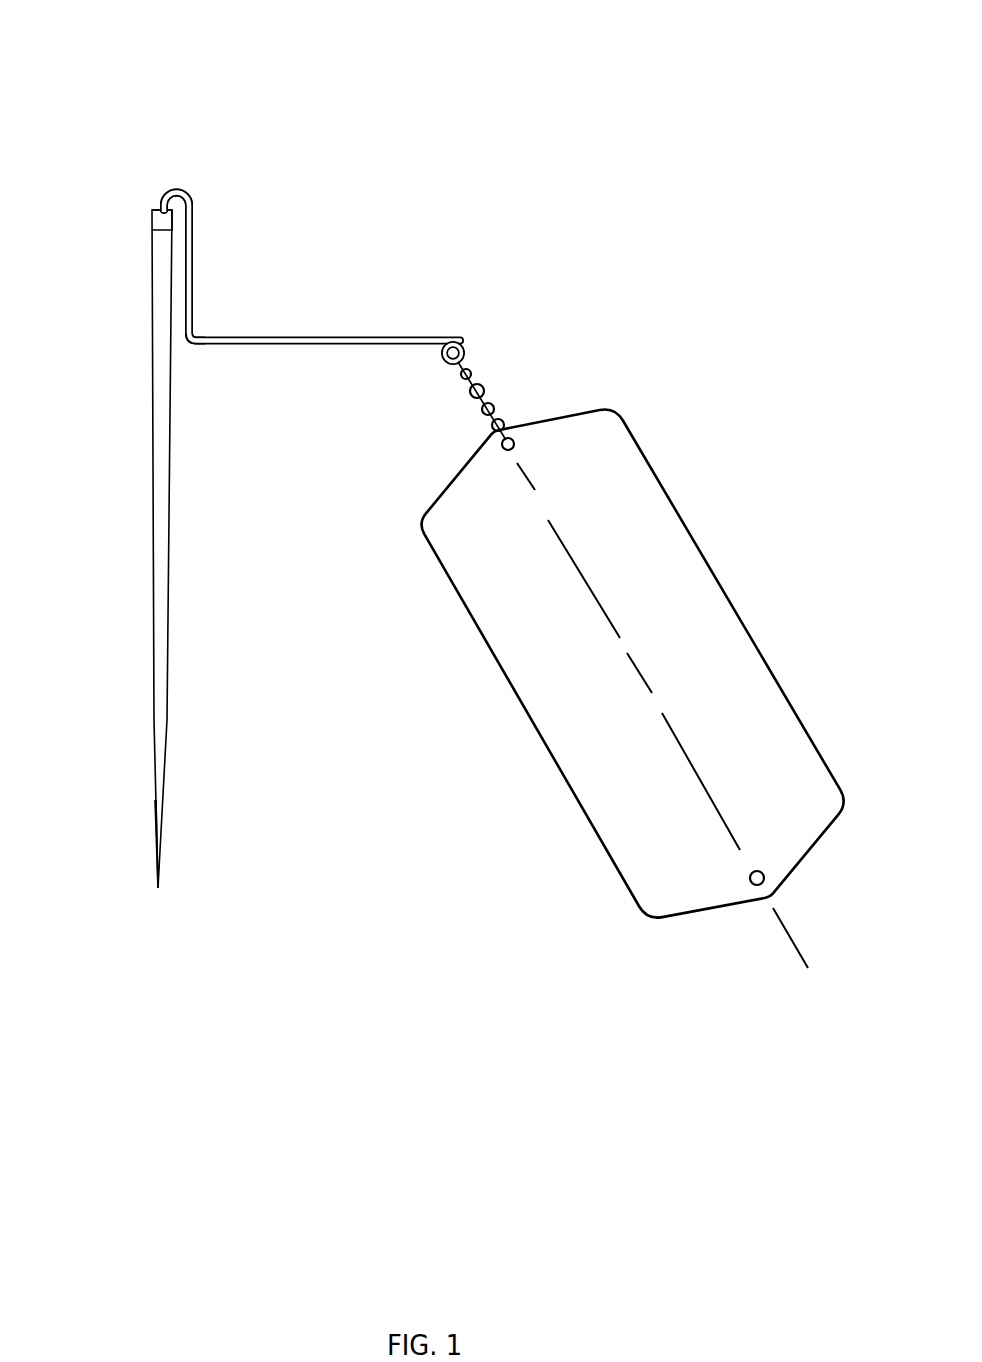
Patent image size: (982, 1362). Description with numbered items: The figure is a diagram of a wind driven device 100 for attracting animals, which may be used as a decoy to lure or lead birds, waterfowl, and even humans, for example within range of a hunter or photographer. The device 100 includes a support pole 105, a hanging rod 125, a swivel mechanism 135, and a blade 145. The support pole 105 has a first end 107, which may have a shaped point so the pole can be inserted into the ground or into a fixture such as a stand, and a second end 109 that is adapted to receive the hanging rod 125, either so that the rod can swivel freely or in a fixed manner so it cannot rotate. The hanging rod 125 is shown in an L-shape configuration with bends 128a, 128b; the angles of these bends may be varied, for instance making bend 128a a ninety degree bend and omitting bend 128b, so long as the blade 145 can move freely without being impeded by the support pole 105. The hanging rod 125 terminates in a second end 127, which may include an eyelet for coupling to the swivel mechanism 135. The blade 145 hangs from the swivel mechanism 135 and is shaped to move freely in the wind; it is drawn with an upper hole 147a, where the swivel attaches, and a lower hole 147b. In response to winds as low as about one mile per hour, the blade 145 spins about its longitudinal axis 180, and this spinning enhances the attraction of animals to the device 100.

The wind driven device 100 is at (578, 36).
The support pole 105 is at (150, 673).
The first end 107 is at (155, 877).
The second end 109 is at (158, 208).
The hanging rod 125 is at (348, 332).
The second end 127 is at (463, 338).
The bend 128a is at (175, 190).
The bend 128b is at (198, 338).
The swivel mechanism 135 is at (490, 400).
The blade 145 is at (672, 503).
The upper hole of tag 147a is at (509, 437).
The lower hole of tag 147b is at (738, 870).
The longitudinal axis 180 is at (640, 683).